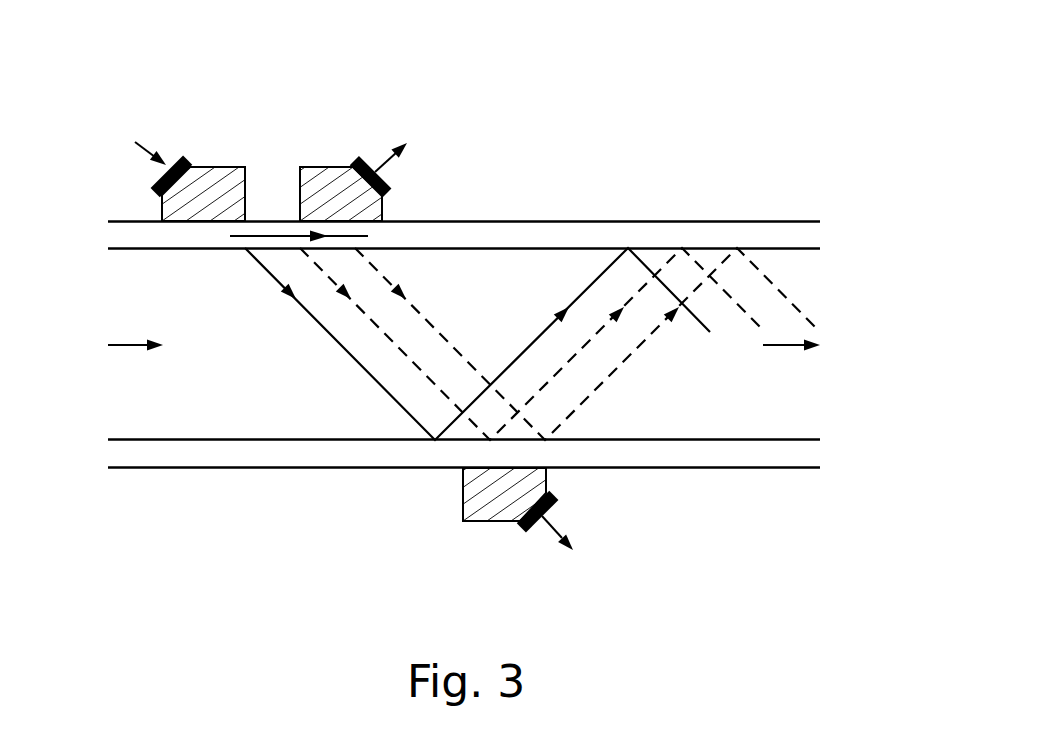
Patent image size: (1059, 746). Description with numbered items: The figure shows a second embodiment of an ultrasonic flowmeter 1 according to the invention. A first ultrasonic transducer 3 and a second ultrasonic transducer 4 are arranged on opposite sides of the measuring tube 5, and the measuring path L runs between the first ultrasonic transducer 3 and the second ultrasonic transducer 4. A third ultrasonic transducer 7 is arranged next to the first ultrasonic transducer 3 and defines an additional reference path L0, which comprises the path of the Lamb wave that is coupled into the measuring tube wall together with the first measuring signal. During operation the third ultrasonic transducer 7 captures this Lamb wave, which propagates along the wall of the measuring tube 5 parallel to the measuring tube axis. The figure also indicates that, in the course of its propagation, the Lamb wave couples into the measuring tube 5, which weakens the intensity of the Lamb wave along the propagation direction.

The ultrasonic flowmeter 1 is at (620, 92).
The first ultrasonic transducer 3 is at (217, 166).
The second ultrasonic transducer 4 is at (483, 521).
The measuring tube 5 is at (672, 457).
The third ultrasonic transducer 7 is at (333, 166).
The measuring path L is at (367, 372).
The reference path L0 is at (280, 248).